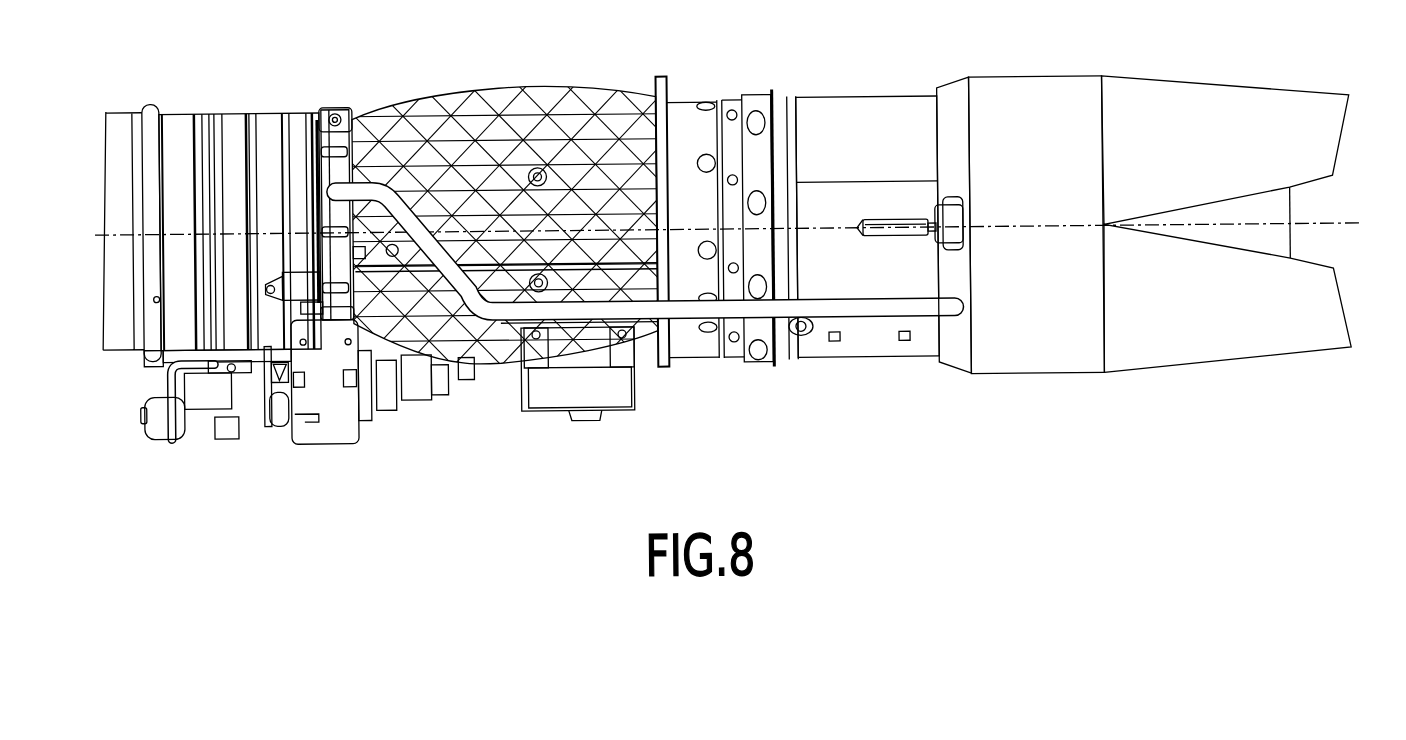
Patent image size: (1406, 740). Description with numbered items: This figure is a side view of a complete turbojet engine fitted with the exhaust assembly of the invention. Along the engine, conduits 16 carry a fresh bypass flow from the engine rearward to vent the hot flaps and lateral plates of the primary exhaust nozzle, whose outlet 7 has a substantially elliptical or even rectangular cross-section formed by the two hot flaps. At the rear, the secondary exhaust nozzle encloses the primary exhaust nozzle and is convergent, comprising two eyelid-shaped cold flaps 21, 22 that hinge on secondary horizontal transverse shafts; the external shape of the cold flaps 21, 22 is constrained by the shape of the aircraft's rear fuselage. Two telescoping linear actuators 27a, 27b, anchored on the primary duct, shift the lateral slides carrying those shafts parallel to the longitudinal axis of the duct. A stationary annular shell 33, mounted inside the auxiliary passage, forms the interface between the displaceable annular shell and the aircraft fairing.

The outlet 7 is at (1307, 201).
The conduits 16 is at (862, 309).
The cold flap 21 is at (1188, 105).
The cold flap 22 is at (1242, 356).
The telescoping linear actuator 27a is at (884, 208).
The telescoping linear actuator 27b is at (874, 133).
The stationary annular shell 33 is at (1030, 95).